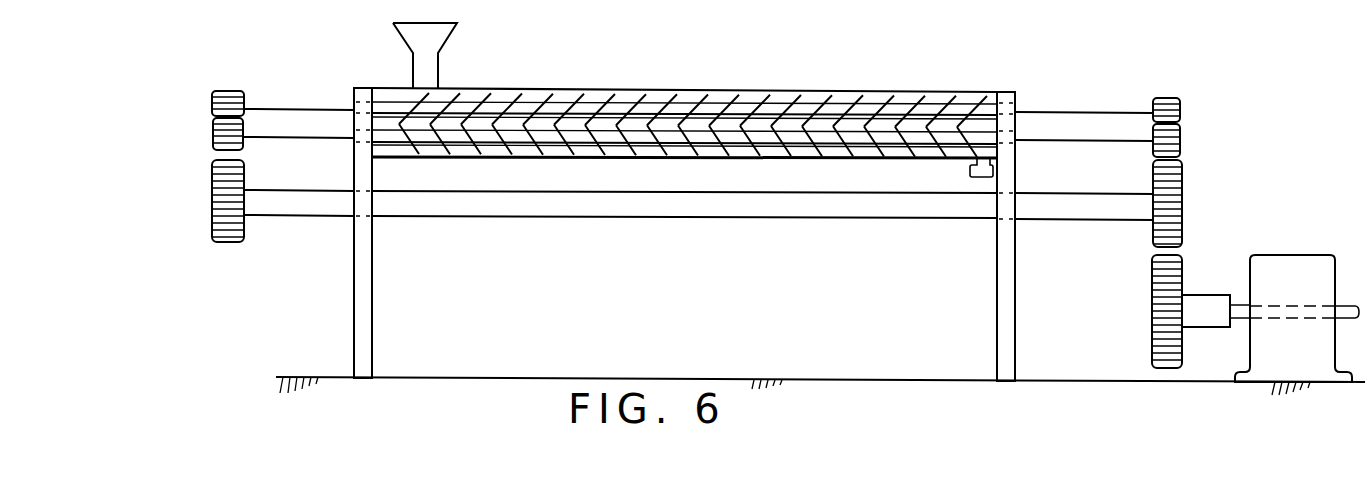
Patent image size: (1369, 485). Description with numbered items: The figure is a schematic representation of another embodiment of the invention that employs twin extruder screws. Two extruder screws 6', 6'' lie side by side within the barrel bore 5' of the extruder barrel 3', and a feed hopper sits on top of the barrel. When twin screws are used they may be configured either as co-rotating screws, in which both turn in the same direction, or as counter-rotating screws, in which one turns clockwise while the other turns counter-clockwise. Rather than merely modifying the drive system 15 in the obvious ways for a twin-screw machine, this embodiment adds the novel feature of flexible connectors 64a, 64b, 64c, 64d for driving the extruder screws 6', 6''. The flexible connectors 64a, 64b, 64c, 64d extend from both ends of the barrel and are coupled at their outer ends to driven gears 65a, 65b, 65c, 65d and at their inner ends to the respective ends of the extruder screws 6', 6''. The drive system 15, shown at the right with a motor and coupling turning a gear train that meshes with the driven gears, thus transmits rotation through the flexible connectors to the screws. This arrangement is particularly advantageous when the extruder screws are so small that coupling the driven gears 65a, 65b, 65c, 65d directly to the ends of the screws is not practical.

The extruder barrel 3' is at (684, 90).
The barrel bore 5' is at (684, 116).
The extruder screw 6' is at (693, 86).
The extruder screw 6'' is at (688, 109).
The drive system 15 is at (1256, 218).
The flexible connector 64a is at (317, 108).
The flexible connector 64b is at (1052, 110).
The flexible connector 64c is at (316, 138).
The flexible connector 64d is at (1090, 140).
The driven gear 65a is at (222, 96).
The driven gear 65b is at (1180, 115).
The driven gear 65c is at (236, 141).
The driven gear 65d is at (1182, 142).